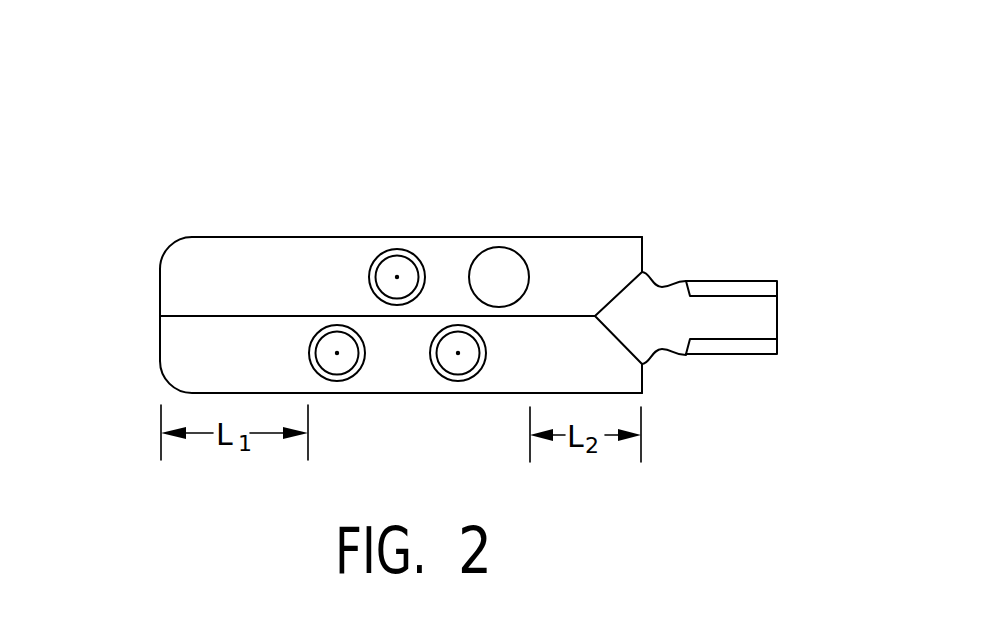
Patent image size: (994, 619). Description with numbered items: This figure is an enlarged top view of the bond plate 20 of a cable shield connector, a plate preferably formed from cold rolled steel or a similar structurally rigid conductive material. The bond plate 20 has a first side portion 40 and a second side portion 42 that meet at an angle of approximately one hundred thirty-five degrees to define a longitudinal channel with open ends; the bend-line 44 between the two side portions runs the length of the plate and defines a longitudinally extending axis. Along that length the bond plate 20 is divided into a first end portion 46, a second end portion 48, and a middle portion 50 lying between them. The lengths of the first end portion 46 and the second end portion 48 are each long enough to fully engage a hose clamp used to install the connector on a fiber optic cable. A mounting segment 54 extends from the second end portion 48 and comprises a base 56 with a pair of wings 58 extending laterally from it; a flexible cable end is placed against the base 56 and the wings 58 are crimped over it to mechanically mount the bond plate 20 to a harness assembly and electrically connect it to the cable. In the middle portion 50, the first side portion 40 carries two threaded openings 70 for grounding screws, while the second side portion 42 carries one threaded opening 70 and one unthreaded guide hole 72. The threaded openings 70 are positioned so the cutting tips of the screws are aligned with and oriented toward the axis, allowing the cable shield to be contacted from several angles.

The bond plate 20 is at (396, 72).
The first side portion 40 is at (160, 369).
The second side portion 42 is at (166, 252).
The bend-line 44 is at (160, 316).
The first end portion 46 is at (220, 267).
The second end portion 48 is at (590, 253).
The middle portion 50 is at (444, 237).
The mounting segment 54 is at (713, 280).
The base 56 is at (757, 318).
The wings 58 is at (768, 280).
The threaded openings 70 is at (388, 278).
The unthreaded guide hole 72 is at (516, 290).